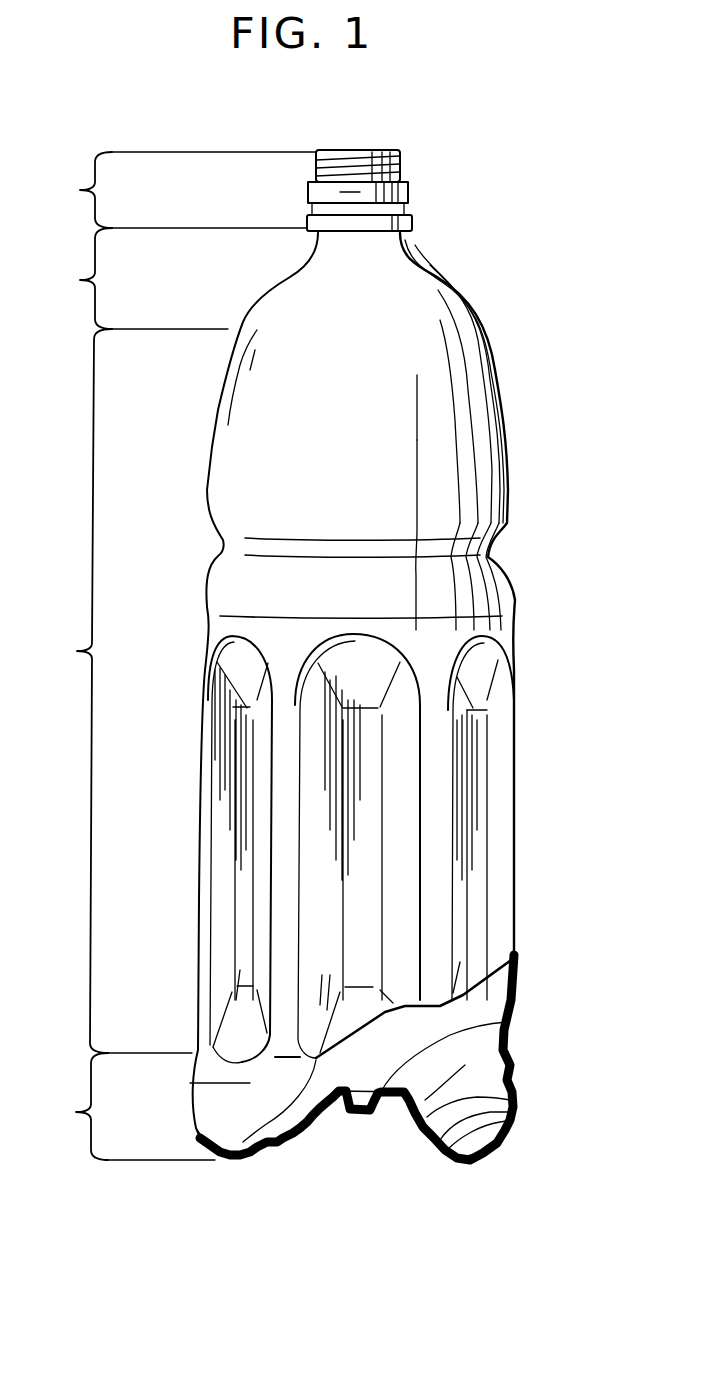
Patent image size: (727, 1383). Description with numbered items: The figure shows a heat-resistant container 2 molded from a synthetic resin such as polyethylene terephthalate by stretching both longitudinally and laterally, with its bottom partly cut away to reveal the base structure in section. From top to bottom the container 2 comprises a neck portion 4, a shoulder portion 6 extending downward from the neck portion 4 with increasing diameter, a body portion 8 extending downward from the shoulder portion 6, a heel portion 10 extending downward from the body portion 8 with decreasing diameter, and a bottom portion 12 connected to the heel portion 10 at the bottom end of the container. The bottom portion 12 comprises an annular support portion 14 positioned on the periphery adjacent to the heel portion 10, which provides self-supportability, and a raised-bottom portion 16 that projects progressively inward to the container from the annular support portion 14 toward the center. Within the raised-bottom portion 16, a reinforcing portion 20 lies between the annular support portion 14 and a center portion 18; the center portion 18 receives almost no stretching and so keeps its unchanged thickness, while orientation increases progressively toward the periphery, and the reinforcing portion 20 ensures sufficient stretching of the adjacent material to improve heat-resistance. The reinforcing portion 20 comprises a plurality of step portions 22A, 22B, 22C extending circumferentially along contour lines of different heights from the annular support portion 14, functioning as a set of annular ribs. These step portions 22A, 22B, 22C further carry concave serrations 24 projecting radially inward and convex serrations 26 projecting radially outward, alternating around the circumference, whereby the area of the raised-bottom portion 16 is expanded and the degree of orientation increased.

The heat-resistant container 2 is at (513, 320).
The neck portion 4 is at (232, 191).
The shoulder portion 6 is at (278, 381).
The body portion 8 is at (280, 751).
The heel portion 10 is at (276, 1057).
The bottom portion 12 is at (229, 1200).
The annular support portion 14 is at (468, 1162).
The raised-bottom portion 16 is at (423, 1101).
The center portion 18 is at (510, 1010).
The reinforcing portion 20 is at (258, 1103).
The step portion 22A is at (313, 1120).
The step portion 22B is at (283, 1142).
The step portion 22C is at (259, 1153).
The concave serrations 24 is at (371, 1074).
The convex serrations 26 is at (240, 1162).